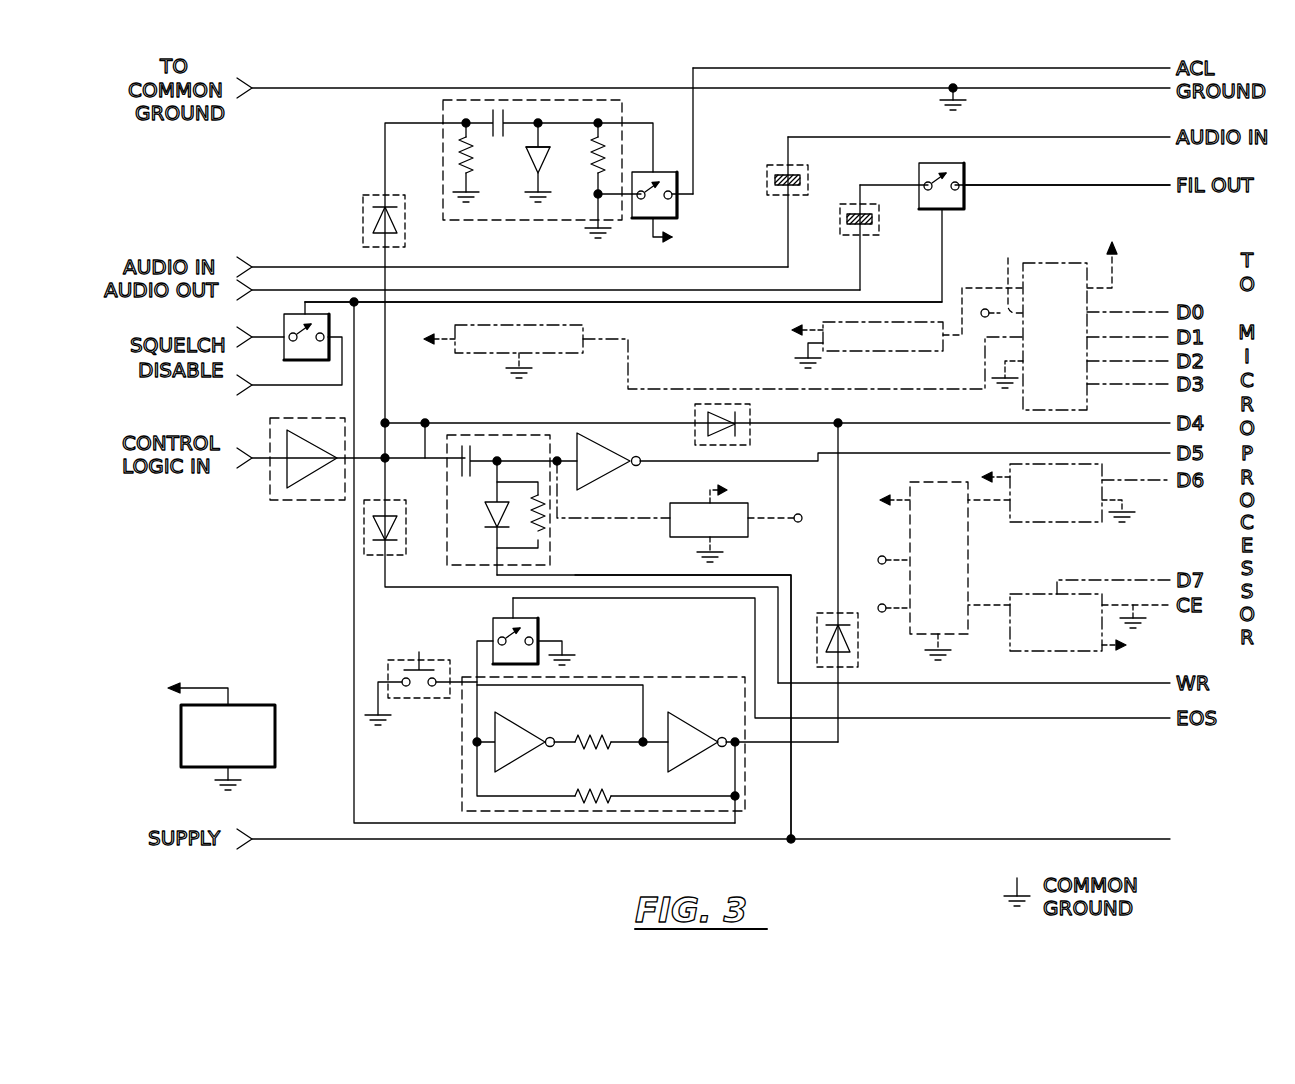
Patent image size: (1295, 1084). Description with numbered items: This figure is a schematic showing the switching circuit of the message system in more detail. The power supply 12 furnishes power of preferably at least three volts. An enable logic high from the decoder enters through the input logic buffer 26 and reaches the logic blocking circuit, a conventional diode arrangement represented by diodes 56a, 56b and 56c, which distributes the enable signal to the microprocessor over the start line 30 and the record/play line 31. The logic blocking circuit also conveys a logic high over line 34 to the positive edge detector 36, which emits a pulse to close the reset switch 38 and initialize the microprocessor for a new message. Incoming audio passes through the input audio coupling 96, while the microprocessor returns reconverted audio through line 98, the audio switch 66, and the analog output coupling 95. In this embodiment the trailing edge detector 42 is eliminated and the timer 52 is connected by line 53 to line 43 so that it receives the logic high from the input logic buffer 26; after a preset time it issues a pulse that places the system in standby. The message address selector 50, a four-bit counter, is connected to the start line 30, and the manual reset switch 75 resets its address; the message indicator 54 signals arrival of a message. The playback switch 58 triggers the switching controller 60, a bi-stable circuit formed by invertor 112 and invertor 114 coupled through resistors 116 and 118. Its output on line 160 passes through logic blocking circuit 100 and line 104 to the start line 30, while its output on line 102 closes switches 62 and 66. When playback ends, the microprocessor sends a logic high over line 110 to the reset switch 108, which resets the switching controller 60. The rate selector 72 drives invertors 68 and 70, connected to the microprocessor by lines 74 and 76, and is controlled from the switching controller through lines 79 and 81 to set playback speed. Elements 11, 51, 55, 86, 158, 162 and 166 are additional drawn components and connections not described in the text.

The connection rate selector to rate switch 11 is at (985, 605).
The power supply 12 is at (242, 705).
The input logic buffer 26 is at (286, 508).
The start line 30 is at (906, 423).
The record/play line 31 is at (994, 683).
The line 34 is at (385, 123).
The positive edge detector 36 is at (505, 100).
The reset switch 38 is at (665, 172).
The trailing edge detector 42 is at (550, 537).
The line 43 is at (418, 423).
The message address selector 50 is at (1046, 264).
The inverter 51 is at (604, 520).
The timer 52 is at (698, 542).
The line 53 is at (768, 518).
The message indicator 54 is at (870, 351).
The indicator connection 55 is at (984, 288).
The logic blocking circuit diode 56a is at (368, 194).
The logic blocking circuit diode 56b is at (350, 528).
The logic blocking circuit diode 56c is at (722, 404).
The playback switch 58 is at (404, 660).
The switching controller 60 is at (603, 729).
The switch 62 is at (286, 330).
The audio switch 66 is at (966, 178).
The invertor 68 is at (1050, 522).
The invertor 70 is at (1028, 594).
The rate selector 72 is at (968, 538).
The line 74 is at (1203, 490).
The manual reset switch 75 is at (562, 353).
The line 76 is at (1204, 585).
The line 79 is at (886, 559).
The line 81 is at (886, 607).
The message counter switch 86 is at (1002, 274).
The analog output coupling 95 is at (849, 235).
The input audio coupling 96 is at (775, 165).
The line 98 is at (1070, 186).
The logic blocking circuit 100 is at (824, 613).
The line 102 is at (354, 676).
The line 104 is at (839, 508).
The reset switch 108 is at (536, 625).
The line 110 is at (985, 718).
The invertor 112 is at (515, 730).
The invertor 114 is at (690, 730).
The resistor 116 is at (583, 738).
The resistor 118 is at (589, 792).
The switch connection line 158 is at (458, 682).
The line 160 is at (812, 744).
The switch line 162 is at (335, 302).
The switch line 166 is at (942, 240).